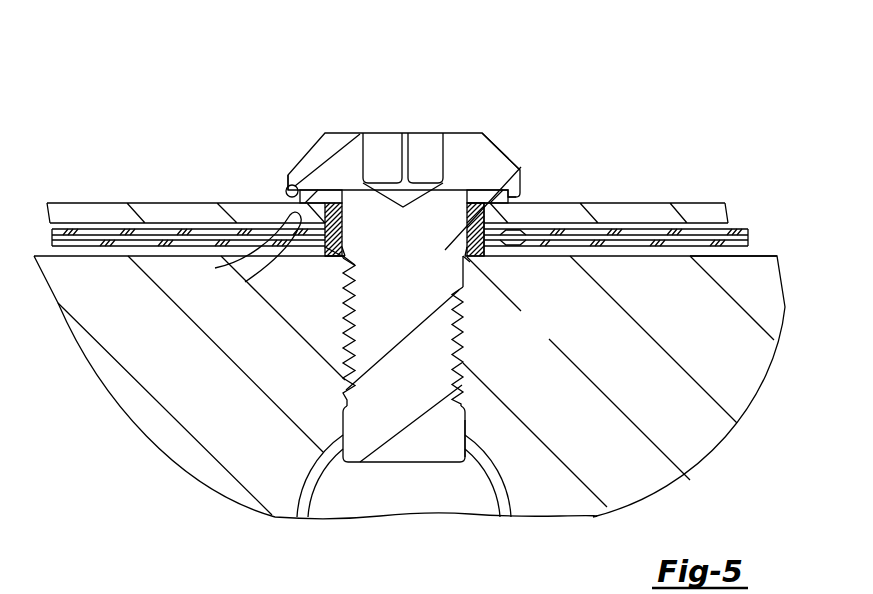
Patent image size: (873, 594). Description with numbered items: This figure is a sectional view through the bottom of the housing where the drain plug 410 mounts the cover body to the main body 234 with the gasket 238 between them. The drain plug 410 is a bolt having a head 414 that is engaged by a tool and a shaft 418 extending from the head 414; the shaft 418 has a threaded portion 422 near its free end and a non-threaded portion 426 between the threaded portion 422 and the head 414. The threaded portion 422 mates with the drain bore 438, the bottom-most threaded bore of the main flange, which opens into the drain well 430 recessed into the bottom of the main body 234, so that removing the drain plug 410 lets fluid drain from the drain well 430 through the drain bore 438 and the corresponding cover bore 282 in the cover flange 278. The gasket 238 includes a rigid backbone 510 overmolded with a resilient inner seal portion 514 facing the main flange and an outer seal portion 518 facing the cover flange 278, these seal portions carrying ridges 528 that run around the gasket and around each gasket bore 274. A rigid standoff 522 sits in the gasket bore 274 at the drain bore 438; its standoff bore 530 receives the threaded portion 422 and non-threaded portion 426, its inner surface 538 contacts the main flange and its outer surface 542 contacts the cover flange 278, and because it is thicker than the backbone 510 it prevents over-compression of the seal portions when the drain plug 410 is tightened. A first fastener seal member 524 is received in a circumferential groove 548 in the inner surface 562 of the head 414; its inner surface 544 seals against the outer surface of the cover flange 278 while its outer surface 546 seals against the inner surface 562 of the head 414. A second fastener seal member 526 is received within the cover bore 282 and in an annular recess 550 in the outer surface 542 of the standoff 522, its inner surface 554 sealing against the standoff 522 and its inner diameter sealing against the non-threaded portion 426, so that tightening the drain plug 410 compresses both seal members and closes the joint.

The main body 234 is at (705, 450).
The gasket 238 is at (758, 239).
The gasket bores 274 is at (555, 242).
The cover flange 278 is at (650, 203).
The cover bores 282 is at (462, 185).
The drain plug 410 is at (431, 237).
The head 414 is at (348, 152).
The shaft 418 is at (393, 397).
The threaded portion 422 is at (460, 350).
The non-threaded portion 426 is at (466, 290).
The drain well 430 is at (461, 500).
The drain bore 438 is at (466, 428).
The backbone 510 is at (730, 231).
The inner seal portion 514 is at (712, 230).
The outer seal portion 518 is at (704, 228).
The standoff 522 is at (468, 258).
The first fastener seal member 524 is at (300, 190).
The second fastener seal member 526 is at (337, 203).
The ridges 528 is at (215, 268).
The standoff bore 530 is at (350, 253).
The inner surface 538 is at (333, 250).
The outer surface 542 is at (515, 207).
The inner surface 544 is at (500, 190).
The outer surface 546 is at (320, 192).
The circumferential groove 548 is at (473, 190).
The annular recess 550 is at (345, 235).
The inner surface 554 is at (345, 252).
The inner surface 562 is at (288, 186).